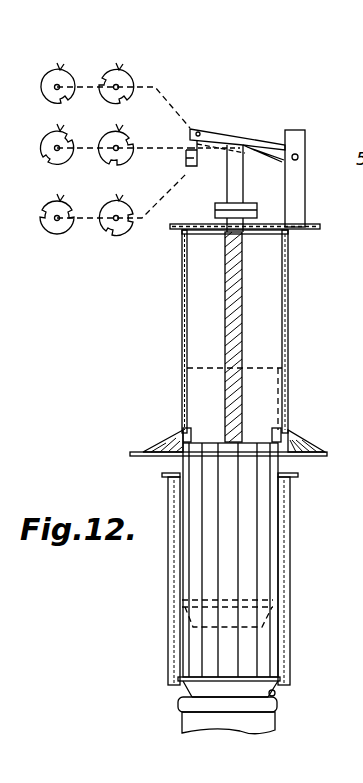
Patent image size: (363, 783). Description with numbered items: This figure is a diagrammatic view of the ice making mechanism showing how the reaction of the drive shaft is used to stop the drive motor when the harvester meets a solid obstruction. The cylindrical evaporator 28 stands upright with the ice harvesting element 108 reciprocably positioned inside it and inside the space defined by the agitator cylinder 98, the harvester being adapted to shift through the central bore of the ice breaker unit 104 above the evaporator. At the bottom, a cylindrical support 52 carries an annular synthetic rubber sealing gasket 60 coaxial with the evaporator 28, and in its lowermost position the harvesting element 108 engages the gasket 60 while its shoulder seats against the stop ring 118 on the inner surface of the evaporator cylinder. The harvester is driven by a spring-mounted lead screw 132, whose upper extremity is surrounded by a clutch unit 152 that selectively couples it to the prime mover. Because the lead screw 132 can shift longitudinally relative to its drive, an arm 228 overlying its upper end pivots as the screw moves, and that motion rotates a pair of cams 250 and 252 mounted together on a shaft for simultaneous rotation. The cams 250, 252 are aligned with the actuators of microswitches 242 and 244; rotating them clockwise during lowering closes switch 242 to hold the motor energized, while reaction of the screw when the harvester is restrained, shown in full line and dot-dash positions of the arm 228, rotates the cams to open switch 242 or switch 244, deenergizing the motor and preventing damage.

The microswitch 242 is at (62, 70).
The microswitch 244 is at (122, 68).
The cam 250 is at (47, 74).
The cam 252 is at (130, 78).
The arm 228 is at (245, 136).
The clutch unit 152 is at (257, 200).
The agitator cylinder 98 is at (288, 258).
The lead screw 132 is at (225, 288).
The ice harvesting element 108 is at (264, 363).
The ice breaker unit 104 is at (307, 434).
The evaporator 28 is at (298, 529).
The stop ring 118 is at (278, 694).
The sealing gasket 60 is at (278, 708).
The cylindrical support 52 is at (268, 725).